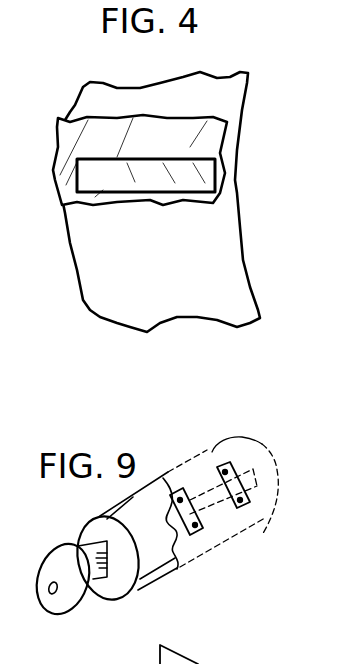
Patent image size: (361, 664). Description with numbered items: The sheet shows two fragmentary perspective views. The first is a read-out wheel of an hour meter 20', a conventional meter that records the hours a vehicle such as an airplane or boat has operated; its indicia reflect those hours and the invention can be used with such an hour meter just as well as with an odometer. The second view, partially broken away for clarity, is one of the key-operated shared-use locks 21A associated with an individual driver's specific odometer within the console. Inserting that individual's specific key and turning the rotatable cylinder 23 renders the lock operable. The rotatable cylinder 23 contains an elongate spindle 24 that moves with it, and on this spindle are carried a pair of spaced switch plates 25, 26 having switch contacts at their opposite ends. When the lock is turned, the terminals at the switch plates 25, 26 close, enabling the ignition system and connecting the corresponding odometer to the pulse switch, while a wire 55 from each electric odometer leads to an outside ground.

In FIG. 4, the hour meter 20' is at (180, 202).
In FIG. 9, the rotatable cylinder 23 is at (112, 503).
In FIG. 9, the shared-use lock 21A is at (105, 600).
In FIG. 9, the switch plate 25 is at (190, 488).
In FIG. 9, the switch plate 26 is at (218, 478).
In FIG. 9, the elongate spindle 24 is at (257, 482).
In FIG. 9, the wire 55 is at (215, 663).